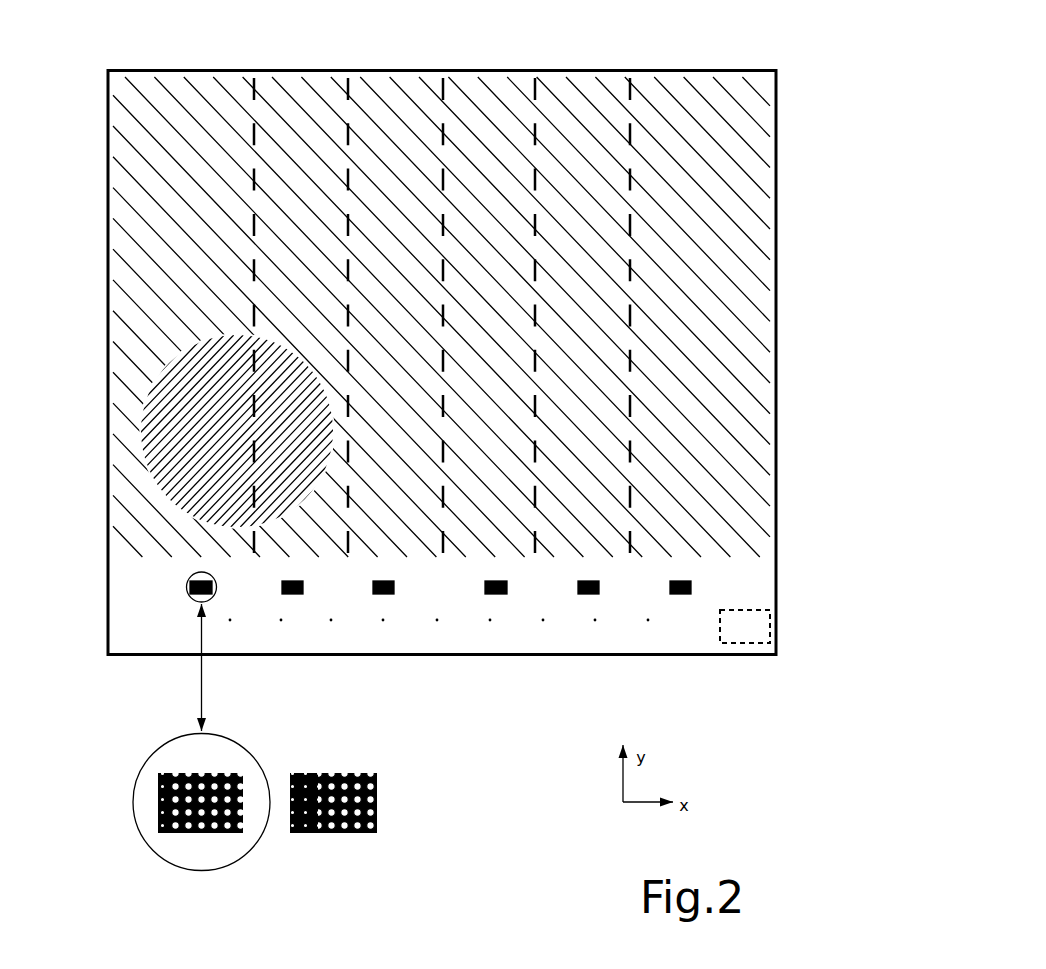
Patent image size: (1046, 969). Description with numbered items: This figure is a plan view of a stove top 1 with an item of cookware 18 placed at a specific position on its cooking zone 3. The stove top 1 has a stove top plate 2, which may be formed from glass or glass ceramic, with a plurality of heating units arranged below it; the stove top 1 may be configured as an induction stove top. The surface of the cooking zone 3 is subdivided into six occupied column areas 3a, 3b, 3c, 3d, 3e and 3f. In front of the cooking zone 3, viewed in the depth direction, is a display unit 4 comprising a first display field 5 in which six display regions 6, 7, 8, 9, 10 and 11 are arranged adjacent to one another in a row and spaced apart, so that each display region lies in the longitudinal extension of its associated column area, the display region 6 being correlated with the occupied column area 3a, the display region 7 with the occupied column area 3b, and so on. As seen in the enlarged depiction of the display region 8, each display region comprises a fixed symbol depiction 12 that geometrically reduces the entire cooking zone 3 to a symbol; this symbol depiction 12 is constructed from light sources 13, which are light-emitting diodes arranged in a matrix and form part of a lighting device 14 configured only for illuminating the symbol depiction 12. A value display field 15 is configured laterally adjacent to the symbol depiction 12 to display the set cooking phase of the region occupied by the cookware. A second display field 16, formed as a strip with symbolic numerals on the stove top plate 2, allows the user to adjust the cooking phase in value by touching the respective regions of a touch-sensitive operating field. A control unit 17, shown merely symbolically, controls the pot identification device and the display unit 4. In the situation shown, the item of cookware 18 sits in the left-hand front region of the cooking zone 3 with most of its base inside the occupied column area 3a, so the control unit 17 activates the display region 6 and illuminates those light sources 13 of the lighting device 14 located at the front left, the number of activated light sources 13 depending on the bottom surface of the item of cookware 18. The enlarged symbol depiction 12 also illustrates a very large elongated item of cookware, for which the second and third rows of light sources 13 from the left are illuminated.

The stove top 1 is at (794, 468).
The stove top plate 2 is at (787, 587).
The cooking zone 3 is at (636, 90).
The occupied column area 3a is at (166, 93).
The occupied column area 3b is at (281, 93).
The occupied column area 3c is at (393, 93).
The occupied column area 3d is at (504, 93).
The occupied column area 3e is at (596, 93).
The occupied column area 3f is at (711, 93).
The display unit 4 is at (638, 630).
The first display field 5 is at (708, 582).
The display region 6 is at (191, 609).
The display region 7 is at (293, 603).
The display region 8 is at (378, 601).
The display region 9 is at (486, 601).
The display region 10 is at (585, 601).
The display region 11 is at (683, 601).
The symbol depiction 12 is at (185, 582).
The light source 13 is at (158, 812).
The lighting device 14 is at (160, 829).
The value display field 15 is at (234, 583).
The second display field 16 is at (243, 630).
The control unit 17 is at (772, 627).
The item of cookware 18 is at (163, 424).